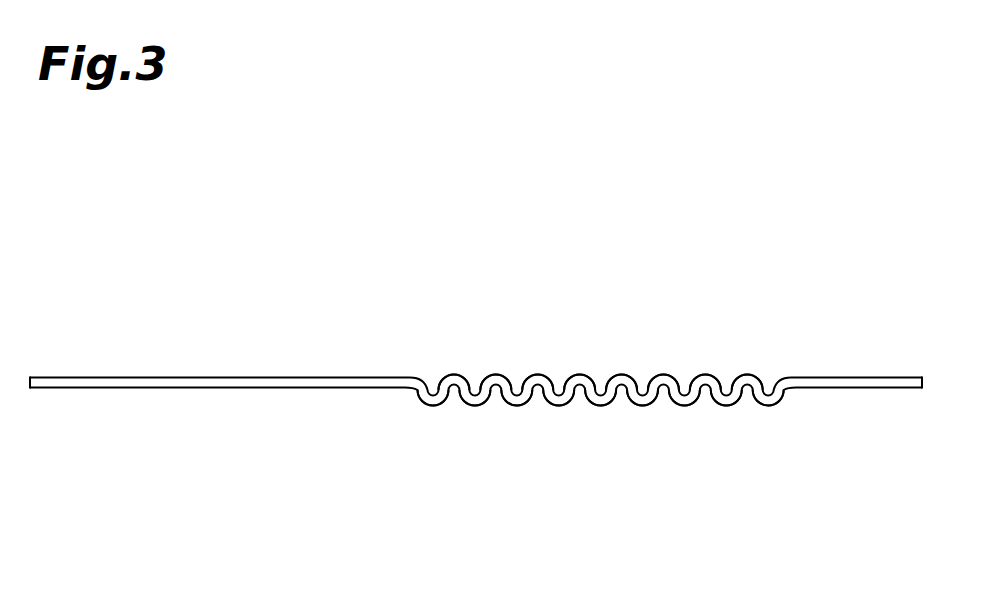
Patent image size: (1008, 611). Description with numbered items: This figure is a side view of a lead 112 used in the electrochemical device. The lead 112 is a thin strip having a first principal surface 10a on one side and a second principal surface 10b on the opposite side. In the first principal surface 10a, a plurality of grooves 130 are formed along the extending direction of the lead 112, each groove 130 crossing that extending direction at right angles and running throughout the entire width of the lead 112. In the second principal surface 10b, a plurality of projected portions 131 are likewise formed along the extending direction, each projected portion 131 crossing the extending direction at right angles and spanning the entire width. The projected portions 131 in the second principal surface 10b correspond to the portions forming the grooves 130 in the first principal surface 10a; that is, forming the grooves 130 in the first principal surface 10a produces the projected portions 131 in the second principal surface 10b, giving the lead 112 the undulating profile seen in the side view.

The lead 112 is at (476, 305).
The first principal surface 10a is at (147, 375).
The second principal surface 10b is at (93, 390).
The groove 130 is at (555, 380).
The projected portion 131 is at (558, 405).